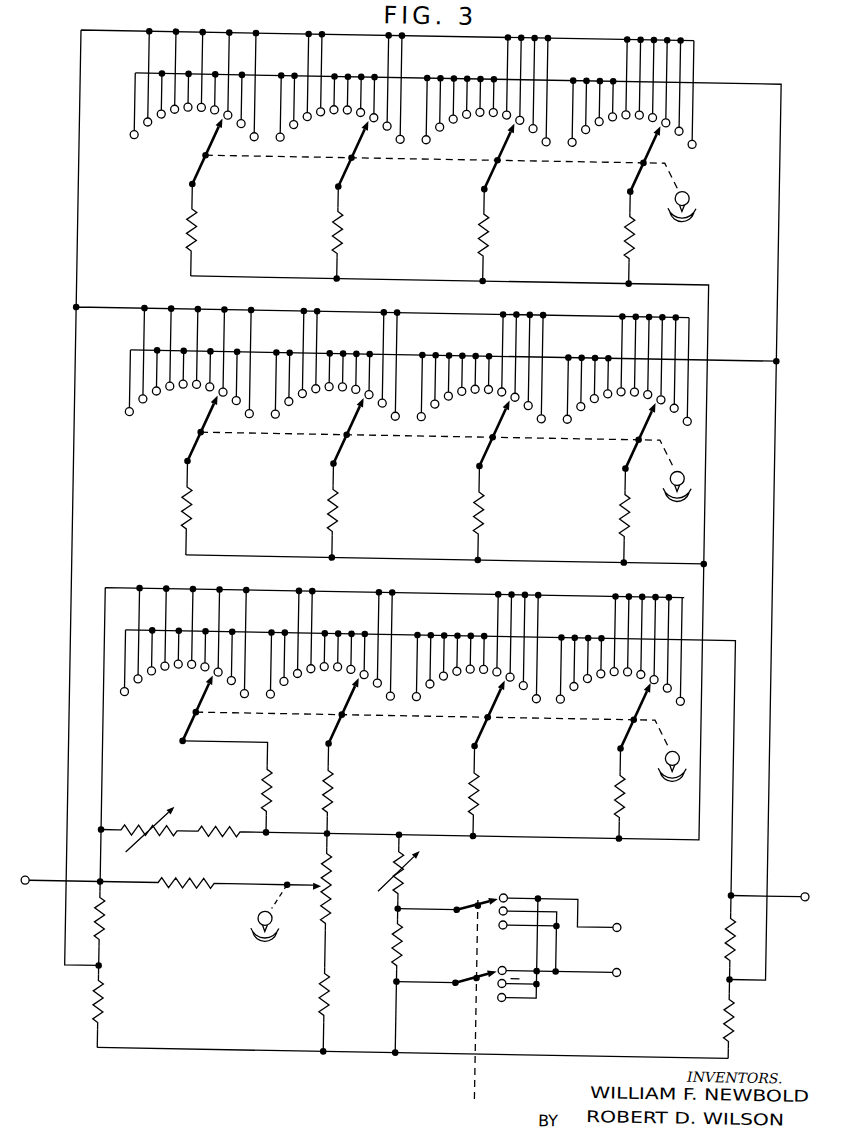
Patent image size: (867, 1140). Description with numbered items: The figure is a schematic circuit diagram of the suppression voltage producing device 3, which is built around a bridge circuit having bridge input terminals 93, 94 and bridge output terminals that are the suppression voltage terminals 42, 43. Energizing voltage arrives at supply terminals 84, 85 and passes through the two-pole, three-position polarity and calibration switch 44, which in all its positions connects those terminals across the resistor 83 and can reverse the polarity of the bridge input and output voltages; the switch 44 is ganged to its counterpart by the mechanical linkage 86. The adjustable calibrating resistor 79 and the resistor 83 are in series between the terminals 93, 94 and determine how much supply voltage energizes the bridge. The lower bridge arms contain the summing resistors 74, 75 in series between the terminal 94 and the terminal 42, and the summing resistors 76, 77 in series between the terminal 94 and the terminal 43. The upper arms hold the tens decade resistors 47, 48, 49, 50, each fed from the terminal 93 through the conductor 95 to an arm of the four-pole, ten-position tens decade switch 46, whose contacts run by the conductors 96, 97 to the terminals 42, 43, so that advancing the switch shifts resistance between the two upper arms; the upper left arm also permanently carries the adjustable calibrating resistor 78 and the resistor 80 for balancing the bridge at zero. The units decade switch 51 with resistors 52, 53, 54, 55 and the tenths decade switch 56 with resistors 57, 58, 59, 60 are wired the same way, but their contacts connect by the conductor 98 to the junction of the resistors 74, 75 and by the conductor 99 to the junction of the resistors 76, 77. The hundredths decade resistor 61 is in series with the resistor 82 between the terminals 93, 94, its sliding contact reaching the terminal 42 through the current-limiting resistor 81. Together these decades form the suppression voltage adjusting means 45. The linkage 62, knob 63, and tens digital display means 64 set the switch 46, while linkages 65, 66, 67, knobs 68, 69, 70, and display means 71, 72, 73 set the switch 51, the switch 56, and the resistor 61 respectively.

The suppression voltage producing device 3 is at (293, 1070).
The suppression voltage terminal 42 is at (41, 877).
The suppression voltage terminal 43 is at (820, 880).
The polarity and calibration switch 44 is at (530, 881).
The suppression voltage adjusting means 45 is at (261, 973).
The tens decade switch 46 is at (460, 713).
The tens decade resistor 47 is at (285, 790).
The tens decade resistor 48 is at (346, 790).
The tens decade resistor 49 is at (492, 794).
The tens decade resistor 50 is at (628, 784).
The units decade switch 51 is at (473, 435).
The units decade resistor 52 is at (200, 506).
The units decade resistor 53 is at (346, 510).
The units decade resistor 54 is at (492, 508).
The units decade resistor 55 is at (628, 503).
The tenths decade switch 56 is at (476, 157).
The tenths decade resistor 57 is at (200, 232).
The tenths decade resistor 58 is at (346, 232).
The tenths decade resistor 59 is at (492, 230).
The tenths decade resistor 60 is at (638, 233).
The hundredths decade resistor 61 is at (344, 884).
The linkage 62 is at (402, 711).
The adjusting knob 63 is at (686, 740).
The tens digital display means 64 is at (684, 767).
The linkage 65 is at (420, 431).
The linkage 66 is at (410, 154).
The linkage 67 is at (285, 902).
The knob 68 is at (686, 460).
The knob 69 is at (692, 186).
The knob 70 is at (273, 916).
The digital display means 71 is at (684, 490).
The digital display means 72 is at (694, 207).
The hundredths digital display means 73 is at (275, 935).
The summing resistor 74 is at (120, 920).
The summing resistor 75 is at (120, 998).
The summing resistor 76 is at (742, 934).
The summing resistor 77 is at (742, 1020).
The adjustable calibrating resistor 78 is at (162, 825).
The adjustable calibrating resistor 79 is at (420, 878).
The resistor 80 is at (243, 825).
The current-limiting resistor 81 is at (206, 877).
The resistor 82 is at (303, 1011).
The resistor 83 is at (418, 950).
The supply terminal 84 is at (636, 915).
The supply terminal 85 is at (635, 967).
The mechanical linkage 86 is at (493, 1075).
The bridge input terminal 93 is at (415, 828).
The bridge input terminal 94 is at (413, 1050).
The conductor 95 is at (414, 274).
The conductor 96 is at (441, 587).
The conductor 97 is at (418, 629).
The conductor 98 is at (581, 29).
The conductor 99 is at (561, 72).